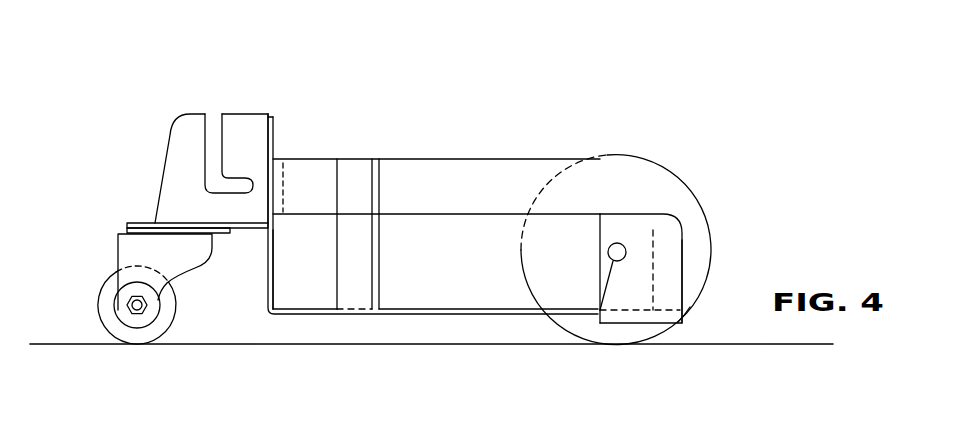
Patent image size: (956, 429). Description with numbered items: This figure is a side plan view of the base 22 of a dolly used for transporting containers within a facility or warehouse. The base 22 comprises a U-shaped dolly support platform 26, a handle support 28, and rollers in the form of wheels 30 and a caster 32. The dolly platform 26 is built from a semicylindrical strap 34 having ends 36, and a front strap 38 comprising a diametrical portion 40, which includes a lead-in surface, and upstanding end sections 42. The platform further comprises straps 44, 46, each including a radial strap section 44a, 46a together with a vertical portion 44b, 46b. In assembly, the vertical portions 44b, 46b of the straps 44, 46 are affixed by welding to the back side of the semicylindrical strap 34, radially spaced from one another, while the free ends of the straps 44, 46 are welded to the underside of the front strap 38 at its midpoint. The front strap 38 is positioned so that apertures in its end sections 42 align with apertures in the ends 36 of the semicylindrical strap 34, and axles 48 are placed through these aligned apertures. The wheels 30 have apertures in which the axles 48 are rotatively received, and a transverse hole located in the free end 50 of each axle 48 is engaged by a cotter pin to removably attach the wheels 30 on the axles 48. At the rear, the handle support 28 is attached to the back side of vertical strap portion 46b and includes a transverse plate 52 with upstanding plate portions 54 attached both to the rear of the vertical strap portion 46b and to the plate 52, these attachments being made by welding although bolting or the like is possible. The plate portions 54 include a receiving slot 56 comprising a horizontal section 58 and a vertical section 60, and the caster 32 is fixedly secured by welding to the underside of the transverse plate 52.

The base 22 is at (405, 217).
The U-shaped dolly support platform 26 is at (700, 318).
The handle support 28 is at (184, 111).
The wheels 30 is at (640, 260).
The caster 32 is at (137, 352).
The semicylindrical strap 34 is at (305, 173).
The ends 36 is at (655, 228).
The front strap 38 is at (648, 330).
The diametrical portion 40 is at (682, 297).
The upstanding end sections 42 is at (683, 258).
The strap 44 is at (377, 318).
The radial strap section 44a is at (517, 315).
The vertical portion 44b is at (355, 263).
The strap 46 is at (404, 252).
The radial strap section 46a is at (317, 317).
The vertical portion 46b is at (267, 243).
The axles 48 is at (586, 340).
The free end 50 is at (619, 243).
The transverse plate 52 is at (142, 223).
The upstanding plate portions 54 is at (188, 147).
The receiving slot 56 is at (185, 198).
The horizontal section 58 is at (242, 173).
The vertical section 60 is at (219, 126).